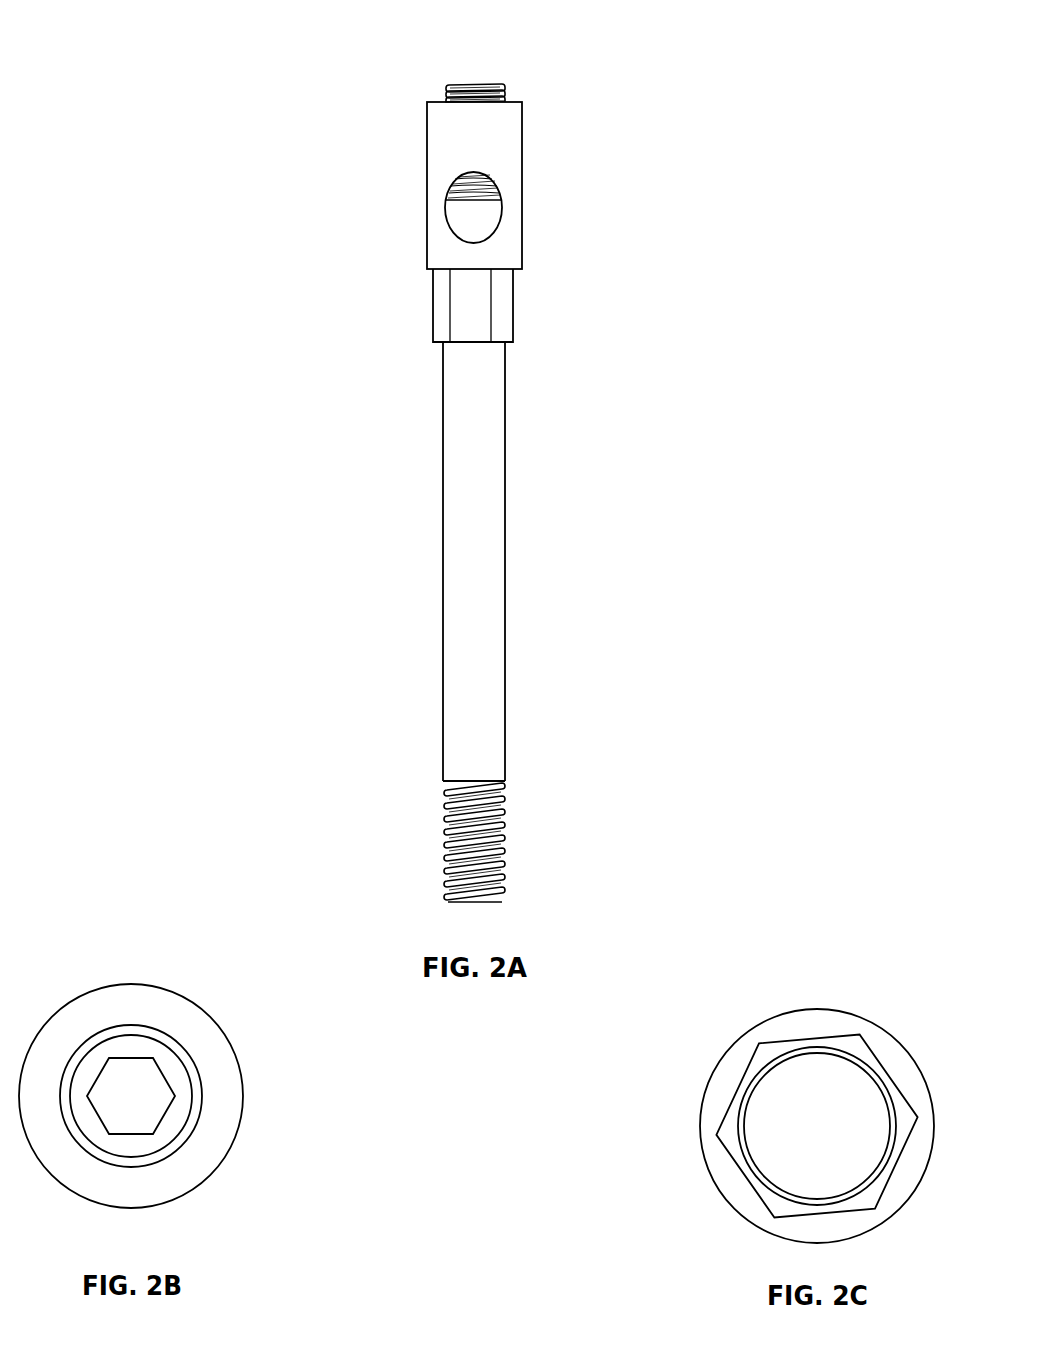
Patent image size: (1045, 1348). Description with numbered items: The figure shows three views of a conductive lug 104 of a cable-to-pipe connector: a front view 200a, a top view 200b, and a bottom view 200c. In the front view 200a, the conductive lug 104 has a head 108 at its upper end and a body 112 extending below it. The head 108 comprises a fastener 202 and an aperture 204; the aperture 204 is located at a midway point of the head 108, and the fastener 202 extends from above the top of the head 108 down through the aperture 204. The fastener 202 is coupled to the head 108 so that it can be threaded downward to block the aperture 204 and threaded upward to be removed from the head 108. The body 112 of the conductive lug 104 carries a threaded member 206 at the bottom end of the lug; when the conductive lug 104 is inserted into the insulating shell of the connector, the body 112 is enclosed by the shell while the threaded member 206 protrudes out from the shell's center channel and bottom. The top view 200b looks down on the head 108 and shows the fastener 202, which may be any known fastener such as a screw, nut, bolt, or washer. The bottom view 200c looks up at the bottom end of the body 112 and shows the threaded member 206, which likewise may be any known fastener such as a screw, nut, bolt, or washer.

In FIG. 2A, the front view 200a is at (655, 72).
In FIG. 2B, the top view 200b is at (200, 955).
In FIG. 2C, the bottom view 200c is at (835, 980).
In FIG. 2A, the conductive lug 104 is at (398, 408).
In FIG. 2A, the head 108 is at (447, 155).
In FIG. 2A, the body 112 is at (470, 646).
In FIG. 2A, the fastener 202 is at (448, 85).
In FIG. 2B, the fastener 202 is at (163, 1093).
In FIG. 2A, the aperture 204 is at (481, 225).
In FIG. 2A, the threaded member 206 is at (446, 829).
In FIG. 2C, the threaded member 206 is at (772, 1100).